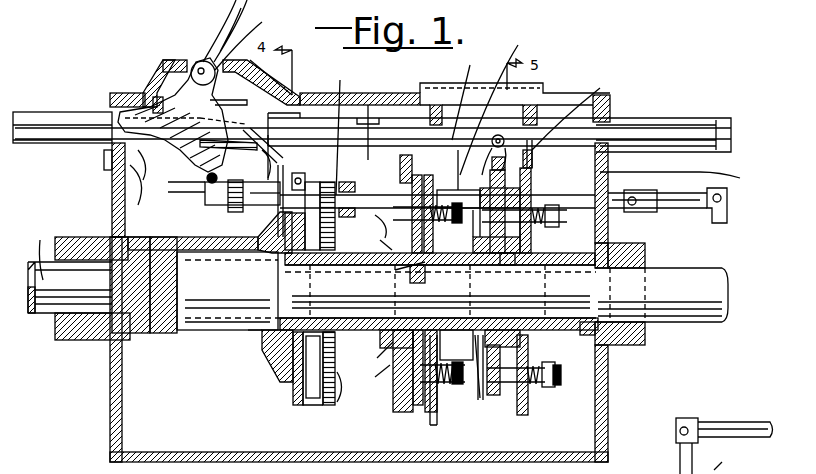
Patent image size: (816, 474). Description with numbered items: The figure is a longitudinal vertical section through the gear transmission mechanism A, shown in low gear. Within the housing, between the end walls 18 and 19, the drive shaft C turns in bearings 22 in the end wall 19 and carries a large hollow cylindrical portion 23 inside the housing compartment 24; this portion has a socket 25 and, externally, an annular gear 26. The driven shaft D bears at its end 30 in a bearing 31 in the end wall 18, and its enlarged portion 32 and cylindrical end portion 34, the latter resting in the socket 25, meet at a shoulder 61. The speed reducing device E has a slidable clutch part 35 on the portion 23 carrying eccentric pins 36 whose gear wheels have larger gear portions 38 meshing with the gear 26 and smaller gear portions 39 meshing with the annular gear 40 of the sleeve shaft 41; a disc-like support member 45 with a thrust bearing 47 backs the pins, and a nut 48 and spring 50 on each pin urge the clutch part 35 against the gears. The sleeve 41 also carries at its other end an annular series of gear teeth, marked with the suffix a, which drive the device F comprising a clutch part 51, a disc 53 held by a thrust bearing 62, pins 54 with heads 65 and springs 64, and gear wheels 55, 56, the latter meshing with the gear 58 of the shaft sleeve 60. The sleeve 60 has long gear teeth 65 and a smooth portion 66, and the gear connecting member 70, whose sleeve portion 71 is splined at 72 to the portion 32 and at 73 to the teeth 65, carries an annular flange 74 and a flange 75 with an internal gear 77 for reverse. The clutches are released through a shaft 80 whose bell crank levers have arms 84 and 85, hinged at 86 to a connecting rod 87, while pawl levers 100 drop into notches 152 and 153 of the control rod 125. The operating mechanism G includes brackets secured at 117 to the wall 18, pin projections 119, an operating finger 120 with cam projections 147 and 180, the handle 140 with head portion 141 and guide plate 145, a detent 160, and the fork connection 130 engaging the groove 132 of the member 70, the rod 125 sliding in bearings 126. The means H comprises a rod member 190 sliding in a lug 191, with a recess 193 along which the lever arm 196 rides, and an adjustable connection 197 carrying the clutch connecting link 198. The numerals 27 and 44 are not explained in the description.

The gear transmission mechanism A is at (604, 432).
The drive shaft C is at (672, 300).
The driven shaft D is at (35, 253).
The speed reducing device E is at (567, 120).
The speed reducing device F is at (493, 108).
The operating mechanism G is at (247, 40).
The automatic operating means H is at (670, 167).
The annular series of gear teeth a is at (430, 339).
The end wall 18 is at (110, 392).
The end wall 19 is at (608, 383).
The bearings 22 is at (598, 340).
The hollow cylindrical portion 23 is at (595, 255).
The housing compartment 24 is at (612, 195).
The socket 25 is at (582, 330).
The annular gear 26 is at (514, 280).
The bearing boss 27 is at (600, 330).
The shaft end 30 is at (88, 283).
The bearing 31 is at (100, 341).
The enlarged portion 32 is at (180, 335).
The cylindrical end portion 34 is at (262, 345).
The clutch part 35 is at (520, 405).
The pins 36 is at (497, 183).
The larger gear portion 38 is at (516, 415).
The smaller gear portion 39 is at (495, 395).
The annular gear portion 40 is at (492, 266).
The sleeve shaft 41 is at (452, 266).
The bolt 44 is at (556, 223).
The disc-like support member 45 is at (482, 400).
The thrust bearing 47 is at (470, 272).
The nut 48 is at (555, 387).
The spring 50 is at (537, 197).
The clutch part 51 is at (432, 425).
The disc 53 is at (371, 225).
The pins 54 is at (400, 395).
The larger gear wheel 55 is at (422, 405).
The smaller gear 56 is at (405, 410).
The gear 58 is at (374, 378).
The shaft sleeve 60 is at (358, 330).
The shoulder 61 is at (278, 284).
The annular thrust bearing 62 is at (376, 354).
The springs 64 is at (458, 385).
The gear teeth 65 is at (318, 265).
The annular smooth portion 66 is at (373, 242).
The gear connecting member 70 is at (218, 237).
The sleeve portion 71 is at (152, 340).
The spline 72 is at (172, 240).
The spline tooth 73 is at (244, 262).
The annular flange 74 is at (298, 388).
The annular flange 75 is at (318, 405).
The internal gear 77 is at (340, 402).
The shaft 80 is at (284, 160).
The lever arm 84 is at (208, 180).
The lever arm 85 is at (255, 158).
The hinge connection 86 is at (252, 140).
The connecting rod 87 is at (339, 131).
The pawl lever 100 is at (440, 92).
The bracket securing point 117 is at (100, 185).
The pin projections 119 is at (200, 61).
The operating finger 120 is at (185, 125).
The control rod 125 is at (610, 138).
The bearings 126 is at (110, 105).
The fork connection 130 is at (292, 132).
The groove 132 is at (268, 372).
The handle 140 is at (228, 20).
The head portion 141 is at (222, 83).
The guide plate 145 is at (271, 77).
The cam projection 147 is at (181, 183).
The notch 152 is at (516, 112).
The notch 153 is at (471, 94).
The spring urged detent 160 is at (150, 170).
The cam projection 180 is at (106, 160).
The reciprocating rod member 190 is at (270, 207).
The lug 191 is at (205, 198).
The recess 193 is at (360, 175).
The lever arm 196 is at (306, 176).
The adjustable connection 197 is at (645, 212).
The clutch connecting link 198 is at (730, 200).